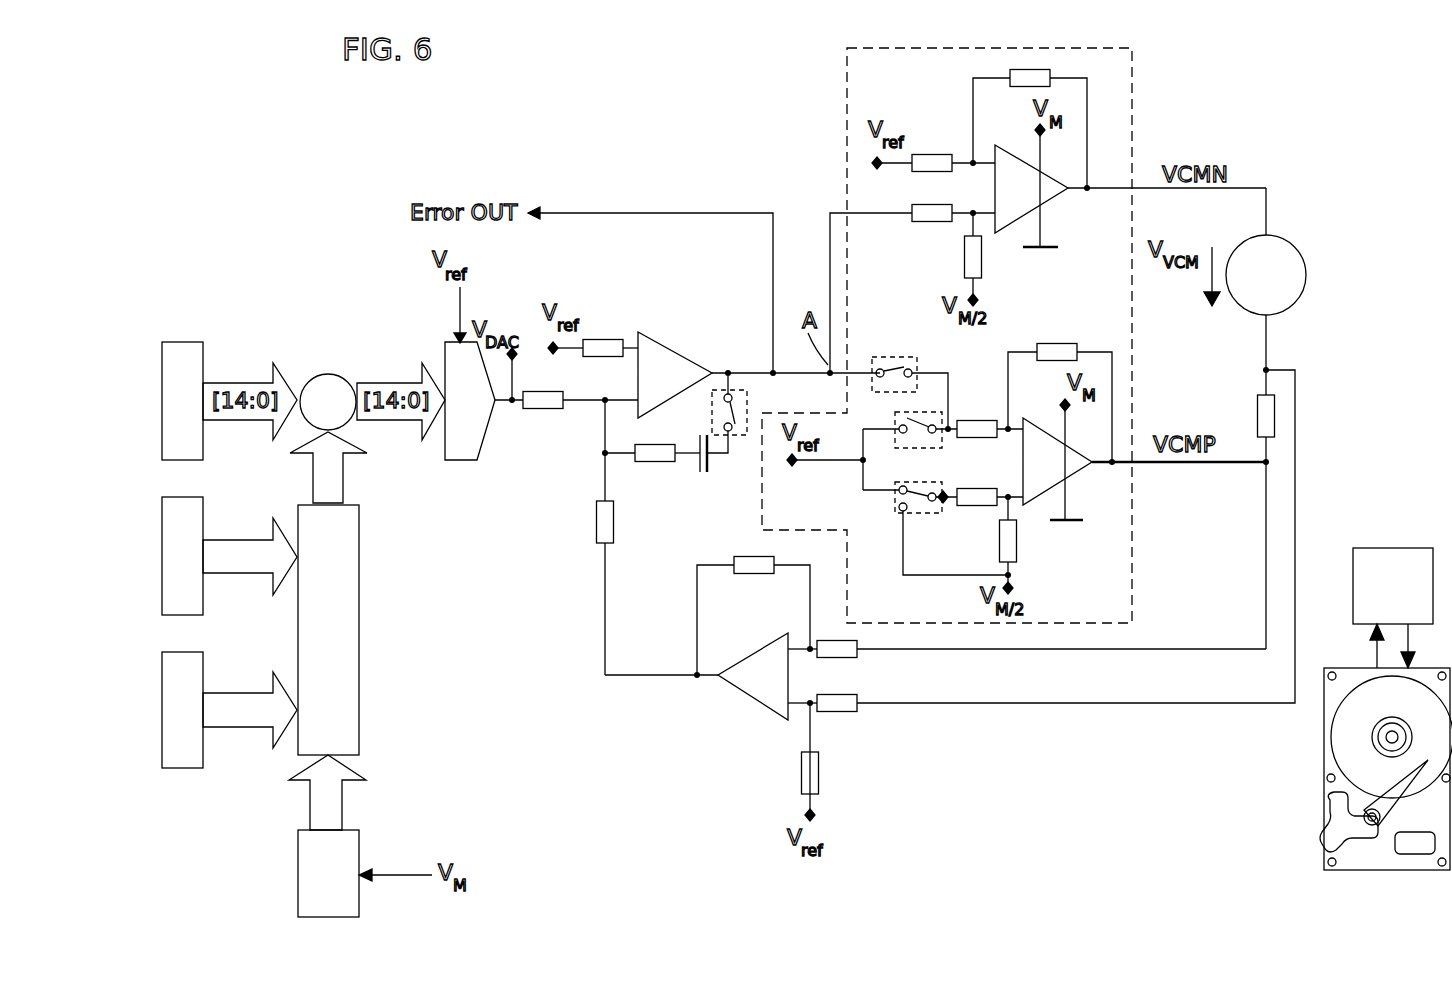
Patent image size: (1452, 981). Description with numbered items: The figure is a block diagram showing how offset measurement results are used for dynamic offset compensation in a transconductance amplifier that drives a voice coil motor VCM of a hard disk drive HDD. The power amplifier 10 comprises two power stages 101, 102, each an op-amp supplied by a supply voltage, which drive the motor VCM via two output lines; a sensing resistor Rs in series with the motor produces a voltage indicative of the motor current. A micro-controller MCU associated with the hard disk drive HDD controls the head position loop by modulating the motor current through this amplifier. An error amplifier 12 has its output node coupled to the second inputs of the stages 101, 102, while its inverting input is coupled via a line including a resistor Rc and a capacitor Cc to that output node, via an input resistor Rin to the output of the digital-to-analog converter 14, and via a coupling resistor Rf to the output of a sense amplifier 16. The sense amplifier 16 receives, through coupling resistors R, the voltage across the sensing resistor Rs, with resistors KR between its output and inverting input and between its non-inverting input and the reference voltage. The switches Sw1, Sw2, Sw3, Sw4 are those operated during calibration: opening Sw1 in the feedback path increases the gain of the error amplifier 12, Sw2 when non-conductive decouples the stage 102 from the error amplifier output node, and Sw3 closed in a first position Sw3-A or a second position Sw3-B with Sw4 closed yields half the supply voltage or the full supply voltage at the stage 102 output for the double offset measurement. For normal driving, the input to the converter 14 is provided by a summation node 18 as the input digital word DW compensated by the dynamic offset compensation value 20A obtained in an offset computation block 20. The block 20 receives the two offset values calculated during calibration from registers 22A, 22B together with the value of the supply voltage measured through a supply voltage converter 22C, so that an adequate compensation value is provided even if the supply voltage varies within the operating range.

The power amplifier 10 is at (803, 91).
The error amplifier 12 is at (667, 358).
The digital-to-analog converter 14 is at (457, 462).
The sense amplifier 16 is at (740, 690).
The summation node 18 is at (328, 373).
The offset computation block 20 is at (346, 628).
The dynamic offset compensation value 20A is at (343, 468).
The offset value register 22A is at (172, 558).
The offset value register 22B is at (165, 708).
The VM ADC converter 22C is at (298, 882).
The power stage 101 is at (1040, 192).
The power stage 102 is at (1075, 468).
The input digital word DW is at (185, 352).
The voice coil motor VCM is at (1292, 273).
The micro-controller MCU is at (1389, 535).
The hard disk drive HDD is at (1293, 833).
The sensing resistor Rs is at (1256, 418).
The input resistor Rin is at (540, 407).
The coupling resistor Rf is at (597, 520).
The resistor Rc is at (655, 462).
The capacitor Cc is at (710, 463).
The switch Sw1 is at (748, 402).
The switch Sw2 is at (895, 358).
The switch Sw3 is at (895, 498).
The first switch position Sw3-A is at (925, 482).
The second switch position Sw3-B is at (923, 508).
The switch Sw4 is at (912, 448).
The resistor KR is at (763, 576).
The coupling resistor R is at (840, 652).